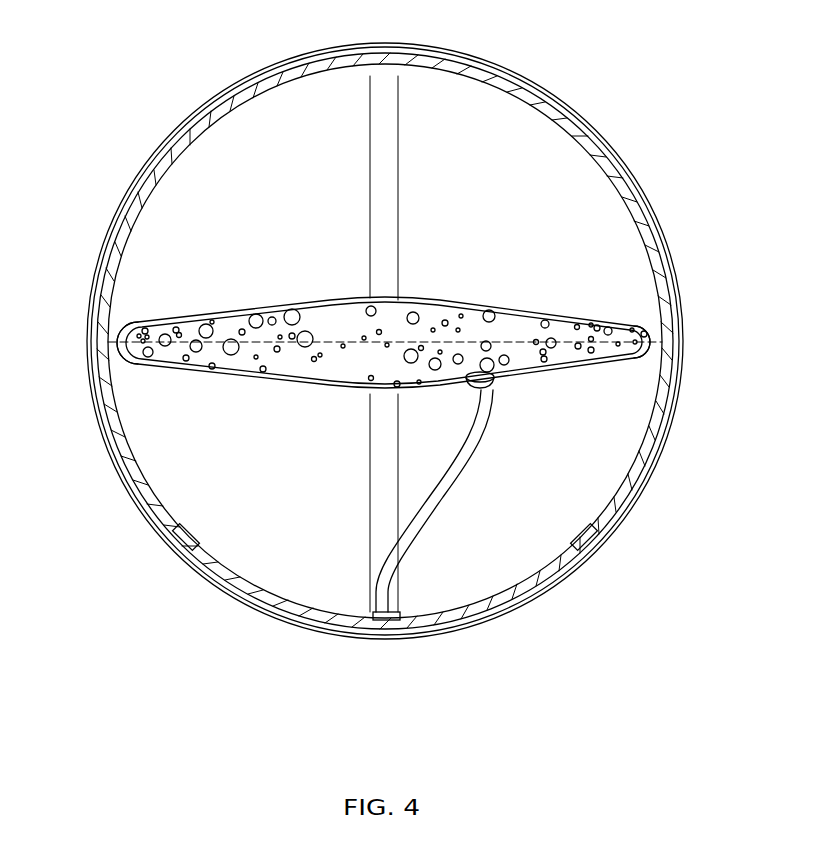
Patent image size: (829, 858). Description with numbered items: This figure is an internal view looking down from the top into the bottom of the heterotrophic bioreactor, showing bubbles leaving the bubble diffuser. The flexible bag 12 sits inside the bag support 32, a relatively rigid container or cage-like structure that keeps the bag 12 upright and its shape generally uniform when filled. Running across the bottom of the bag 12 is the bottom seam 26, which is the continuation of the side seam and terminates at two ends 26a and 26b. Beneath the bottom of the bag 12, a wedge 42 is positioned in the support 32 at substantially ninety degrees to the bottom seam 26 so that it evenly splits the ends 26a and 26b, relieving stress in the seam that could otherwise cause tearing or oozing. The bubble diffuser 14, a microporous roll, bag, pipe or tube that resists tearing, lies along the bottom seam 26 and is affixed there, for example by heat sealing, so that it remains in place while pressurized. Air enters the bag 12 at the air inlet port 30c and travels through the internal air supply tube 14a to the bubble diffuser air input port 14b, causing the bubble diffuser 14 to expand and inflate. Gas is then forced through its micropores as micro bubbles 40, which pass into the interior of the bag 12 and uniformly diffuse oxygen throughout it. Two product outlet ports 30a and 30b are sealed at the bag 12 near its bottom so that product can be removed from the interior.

The bag 12 is at (138, 203).
The bag support 32 is at (218, 100).
The wedge 42 is at (393, 122).
The bottom seam 26 is at (205, 332).
The end of bottom seam 26a is at (120, 343).
The end of bottom seam 26b is at (652, 342).
The micro bubbles 40 is at (472, 307).
The bubble diffuser 14 is at (487, 307).
The air supply tube 14a is at (427, 525).
The bubble diffuser air input port 14b is at (498, 388).
The product outlet port 30a is at (168, 550).
The product outlet port 30b is at (602, 550).
The air inlet port 30c is at (384, 628).